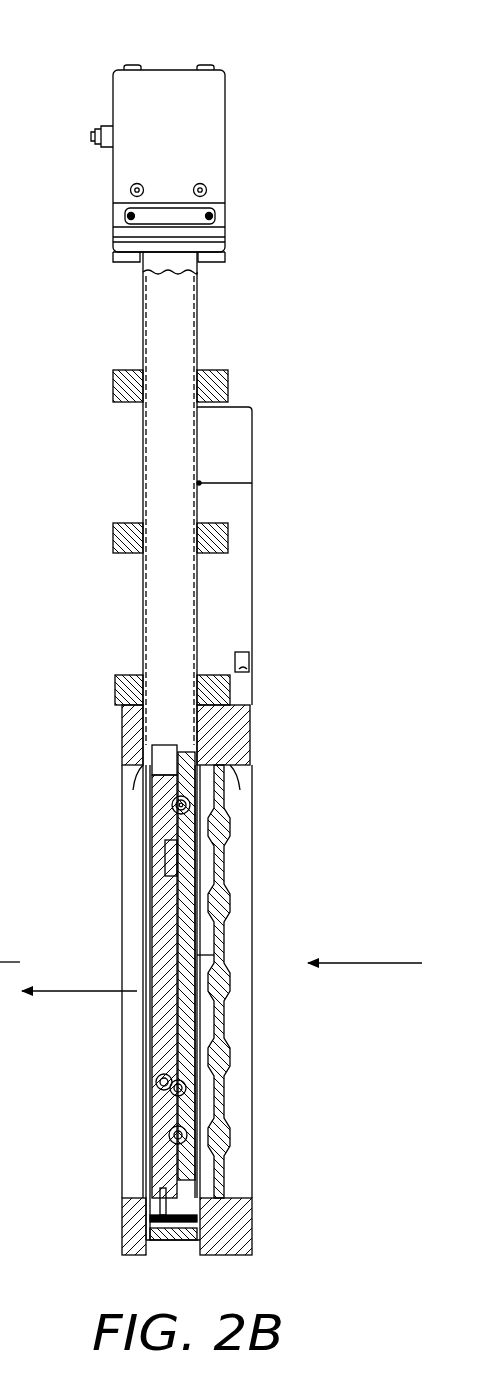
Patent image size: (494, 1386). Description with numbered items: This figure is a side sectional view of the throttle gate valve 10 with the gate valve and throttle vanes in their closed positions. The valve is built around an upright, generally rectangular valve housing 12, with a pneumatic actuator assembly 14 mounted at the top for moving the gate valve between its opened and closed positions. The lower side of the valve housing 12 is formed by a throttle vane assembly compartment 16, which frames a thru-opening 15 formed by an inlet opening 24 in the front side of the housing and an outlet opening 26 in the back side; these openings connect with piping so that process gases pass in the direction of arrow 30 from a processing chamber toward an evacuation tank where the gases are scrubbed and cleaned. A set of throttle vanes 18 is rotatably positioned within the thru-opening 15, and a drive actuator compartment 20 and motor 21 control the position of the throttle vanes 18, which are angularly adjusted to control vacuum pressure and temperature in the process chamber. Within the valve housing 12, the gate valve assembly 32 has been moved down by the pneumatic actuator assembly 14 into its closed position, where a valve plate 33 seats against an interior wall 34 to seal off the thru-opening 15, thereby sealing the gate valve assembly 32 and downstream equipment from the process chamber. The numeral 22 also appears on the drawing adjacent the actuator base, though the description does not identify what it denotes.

The throttle gate valve 10 is at (250, 52).
The valve housing 12 is at (199, 337).
The pneumatic actuator assembly 14 is at (212, 133).
The thru-opening 15 is at (230, 882).
The throttle vane assembly compartment 16 is at (122, 1158).
The throttle vanes 18 is at (282, 1034).
The drive actuator compartment 20 is at (255, 705).
The motor 21 is at (236, 452).
The actuator base 22 is at (228, 247).
The inlet opening 24 is at (242, 770).
The outlet opening 26 is at (136, 770).
The arrow 30 is at (90, 991).
The gate valve assembly 32 is at (143, 656).
The valve plate 33 is at (213, 955).
The interior wall 34 is at (178, 788).